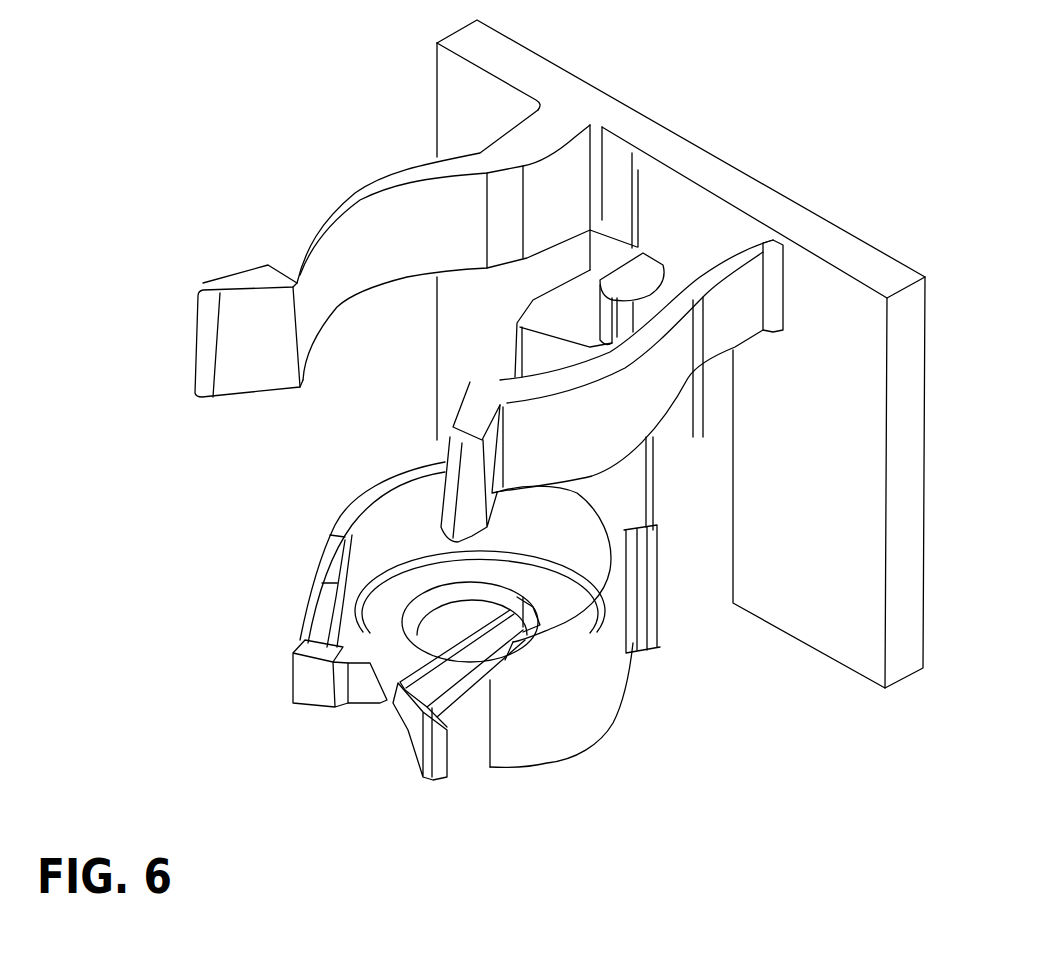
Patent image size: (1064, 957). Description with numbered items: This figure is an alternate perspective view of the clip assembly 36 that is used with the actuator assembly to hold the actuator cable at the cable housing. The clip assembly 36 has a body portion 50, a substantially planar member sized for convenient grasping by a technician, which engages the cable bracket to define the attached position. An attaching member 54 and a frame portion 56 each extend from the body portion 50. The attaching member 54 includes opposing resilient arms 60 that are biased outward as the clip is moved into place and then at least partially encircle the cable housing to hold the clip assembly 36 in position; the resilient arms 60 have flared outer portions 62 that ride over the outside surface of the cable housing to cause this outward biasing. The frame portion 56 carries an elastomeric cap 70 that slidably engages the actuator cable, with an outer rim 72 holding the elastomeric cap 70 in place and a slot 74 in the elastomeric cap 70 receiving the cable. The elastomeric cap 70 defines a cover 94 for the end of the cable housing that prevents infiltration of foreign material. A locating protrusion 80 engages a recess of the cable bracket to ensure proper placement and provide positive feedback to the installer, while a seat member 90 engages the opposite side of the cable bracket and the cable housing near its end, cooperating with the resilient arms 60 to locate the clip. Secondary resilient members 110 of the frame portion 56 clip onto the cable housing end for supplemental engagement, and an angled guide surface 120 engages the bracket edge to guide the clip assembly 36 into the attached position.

The clip assembly 36 is at (678, 762).
The body portion 50 is at (900, 368).
The attaching member 54 is at (359, 164).
The frame portion 56 is at (547, 765).
The resilient arms 60 is at (310, 233).
The flared outer portions 62 is at (205, 325).
The elastomeric cap 70 is at (388, 600).
The outer rim 72 is at (463, 763).
The slot 74 is at (413, 645).
The locating protrusion 80 is at (645, 268).
The seat member 90 is at (642, 473).
The cover 94 is at (382, 710).
The secondary resilient members 110 is at (485, 707).
The angled guide surface 120 is at (333, 605).